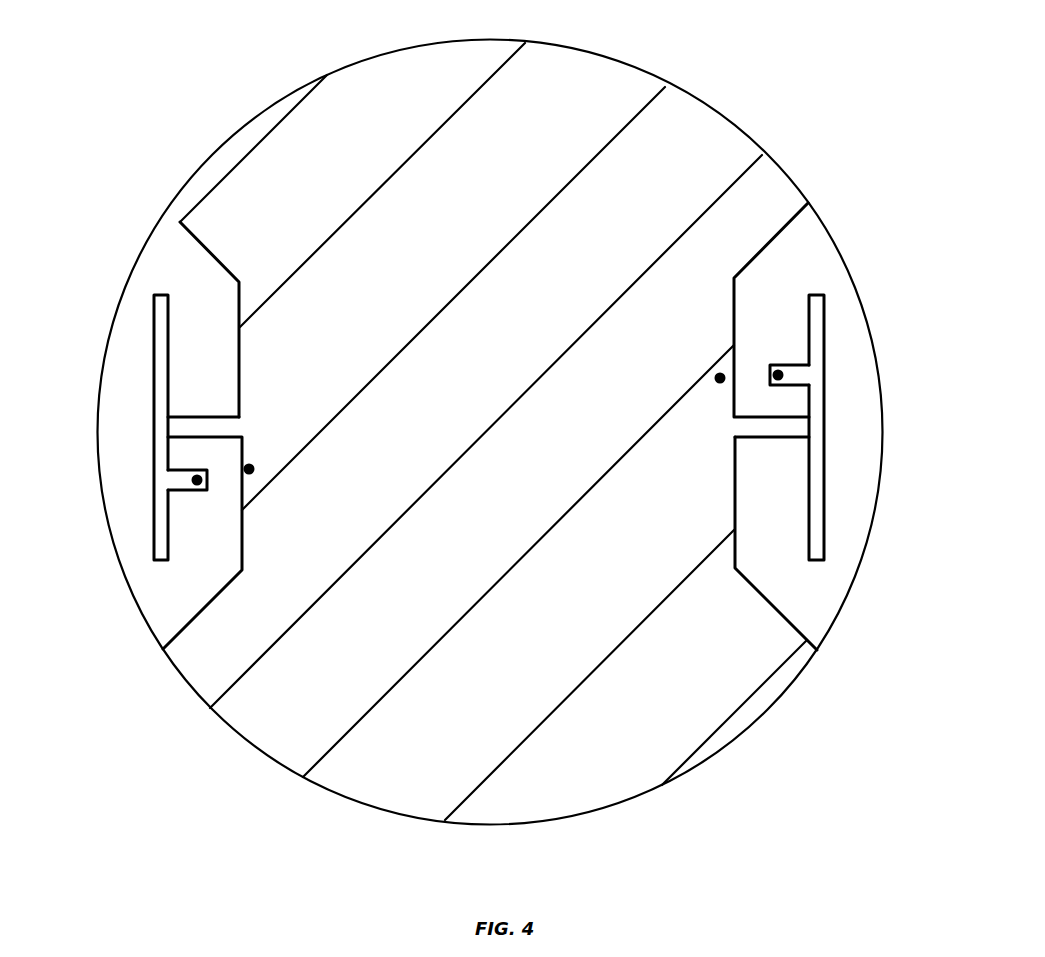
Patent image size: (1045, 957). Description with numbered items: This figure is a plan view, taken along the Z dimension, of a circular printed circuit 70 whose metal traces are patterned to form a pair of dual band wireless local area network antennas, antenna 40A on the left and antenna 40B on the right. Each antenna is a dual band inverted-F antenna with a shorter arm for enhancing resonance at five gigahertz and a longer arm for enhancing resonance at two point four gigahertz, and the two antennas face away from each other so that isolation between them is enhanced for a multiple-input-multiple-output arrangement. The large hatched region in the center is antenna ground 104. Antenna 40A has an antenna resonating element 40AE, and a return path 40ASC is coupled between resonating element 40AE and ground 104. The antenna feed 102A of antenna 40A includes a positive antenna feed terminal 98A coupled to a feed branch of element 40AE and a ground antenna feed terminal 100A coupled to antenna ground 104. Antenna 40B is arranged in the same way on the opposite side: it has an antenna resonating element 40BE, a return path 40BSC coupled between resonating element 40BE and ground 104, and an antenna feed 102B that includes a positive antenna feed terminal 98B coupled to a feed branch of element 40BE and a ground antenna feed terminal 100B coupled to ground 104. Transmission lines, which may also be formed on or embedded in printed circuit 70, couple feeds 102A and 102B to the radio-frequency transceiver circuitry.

The printed circuit 70 is at (628, 829).
The antenna ground 104 is at (613, 108).
The antenna 40A is at (181, 442).
The antenna resonating element 40AE is at (158, 418).
The return path 40ASC is at (197, 417).
The positive antenna feed terminal 98A is at (200, 480).
The ground antenna feed terminal 100A is at (249, 469).
The antenna feed 102A is at (185, 500).
The antenna 40B is at (794, 442).
The antenna resonating element 40BE is at (820, 413).
The return path 40BSC is at (780, 437).
The positive antenna feed terminal 98B is at (778, 376).
The ground antenna feed terminal 100B is at (720, 378).
The antenna feed 102B is at (790, 348).